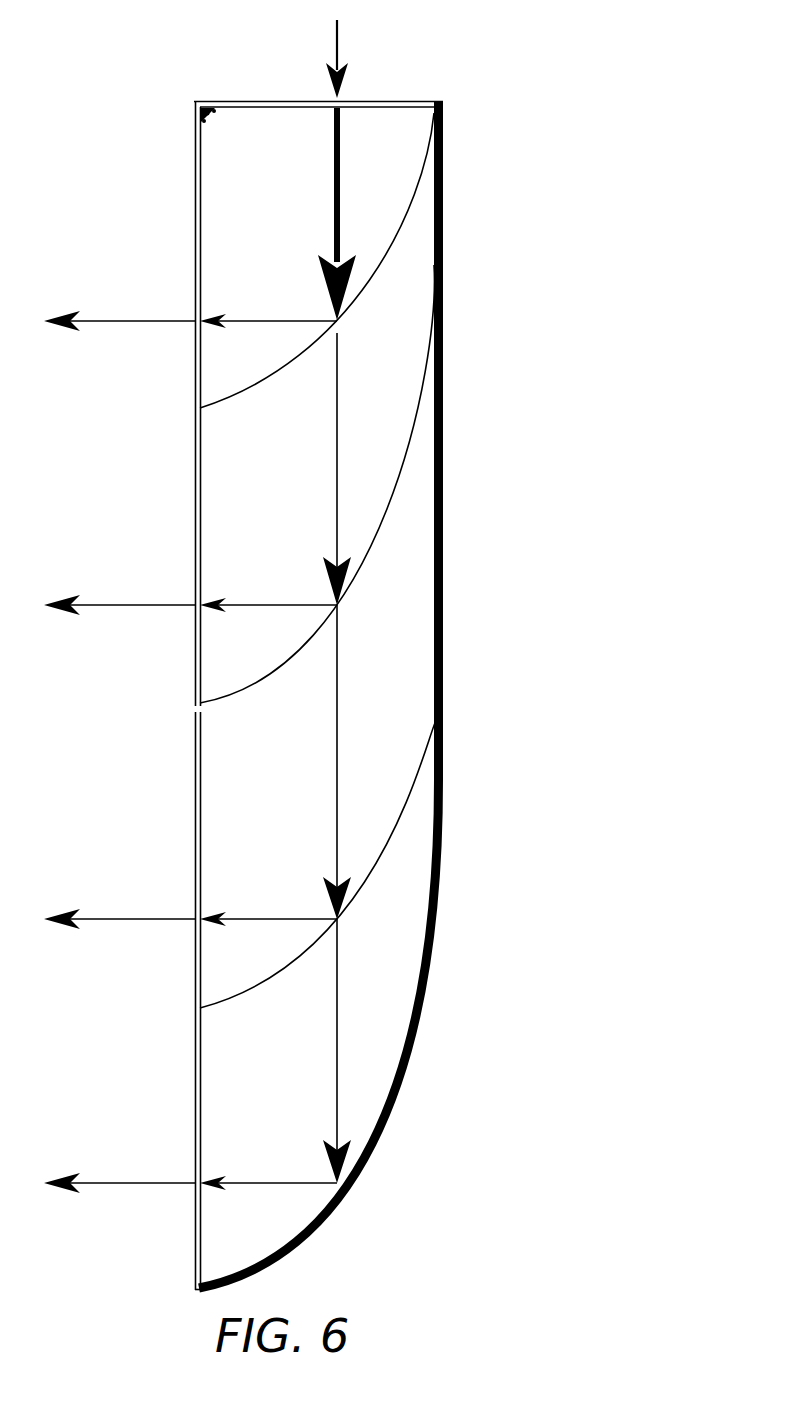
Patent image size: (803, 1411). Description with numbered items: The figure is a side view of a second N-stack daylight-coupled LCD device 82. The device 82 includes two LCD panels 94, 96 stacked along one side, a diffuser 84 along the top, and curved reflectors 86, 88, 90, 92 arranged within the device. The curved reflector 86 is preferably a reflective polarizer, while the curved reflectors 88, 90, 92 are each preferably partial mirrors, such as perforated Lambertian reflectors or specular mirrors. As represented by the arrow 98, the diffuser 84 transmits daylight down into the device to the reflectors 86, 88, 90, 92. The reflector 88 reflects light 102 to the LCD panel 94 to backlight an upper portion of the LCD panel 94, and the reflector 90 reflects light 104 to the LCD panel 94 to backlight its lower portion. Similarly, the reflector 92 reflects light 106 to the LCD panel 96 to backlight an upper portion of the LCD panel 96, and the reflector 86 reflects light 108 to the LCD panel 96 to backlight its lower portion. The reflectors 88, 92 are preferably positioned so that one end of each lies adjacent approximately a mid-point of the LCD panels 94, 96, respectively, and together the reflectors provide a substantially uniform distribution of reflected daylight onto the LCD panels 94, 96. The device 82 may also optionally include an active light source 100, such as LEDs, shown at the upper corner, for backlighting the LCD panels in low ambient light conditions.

The N-stack daylight-coupled LCD device 82 is at (455, 44).
The diffuser 84 is at (400, 100).
The curved reflector 86 is at (443, 885).
The curved reflector 88 is at (393, 238).
The curved reflector 90 is at (398, 470).
The curved reflector 92 is at (397, 815).
The LCD panel 94 is at (196, 465).
The LCD panel 96 is at (196, 1054).
The arrow 98 is at (333, 40).
The active light source 100 is at (204, 106).
The light 102 is at (275, 318).
The light 104 is at (272, 602).
The light 106 is at (278, 917).
The light 108 is at (280, 1181).